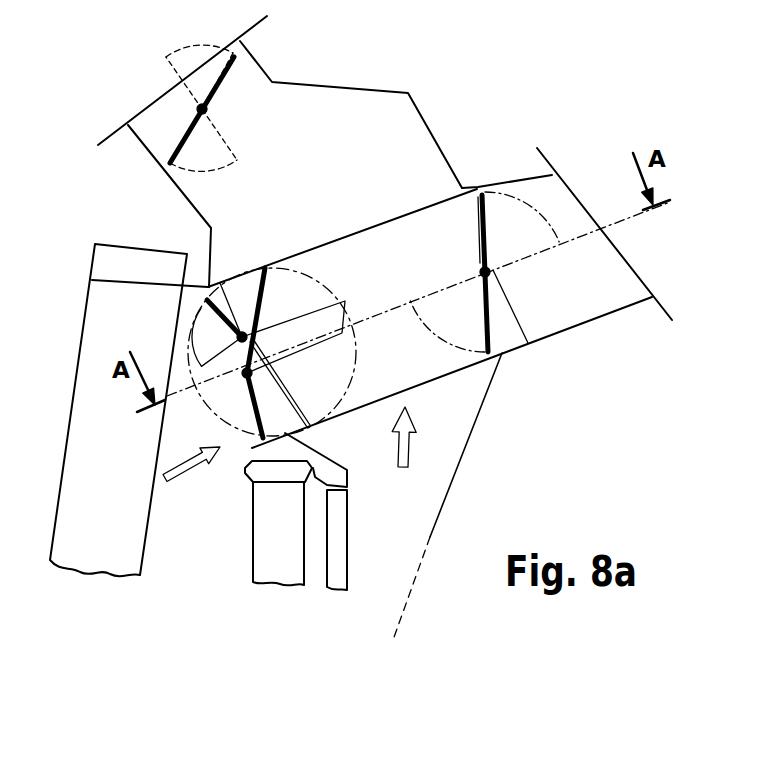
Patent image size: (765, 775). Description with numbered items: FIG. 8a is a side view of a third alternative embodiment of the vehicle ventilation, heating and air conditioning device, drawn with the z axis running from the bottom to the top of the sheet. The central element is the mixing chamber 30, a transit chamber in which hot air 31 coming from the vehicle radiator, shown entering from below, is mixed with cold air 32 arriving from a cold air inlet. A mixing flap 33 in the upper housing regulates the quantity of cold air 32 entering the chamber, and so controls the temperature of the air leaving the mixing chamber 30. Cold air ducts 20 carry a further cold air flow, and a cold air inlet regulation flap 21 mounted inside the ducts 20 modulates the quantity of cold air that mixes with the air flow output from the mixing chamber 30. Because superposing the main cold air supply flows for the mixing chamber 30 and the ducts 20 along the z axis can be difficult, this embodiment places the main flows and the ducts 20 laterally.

The cold air ducts 20 is at (430, 210).
The cold air inlet regulation flap 21 is at (263, 422).
The mixing chamber 30 is at (408, 242).
The hot air 31 is at (403, 450).
The cold air 32 is at (183, 463).
The mixing flap 33 is at (385, 168).